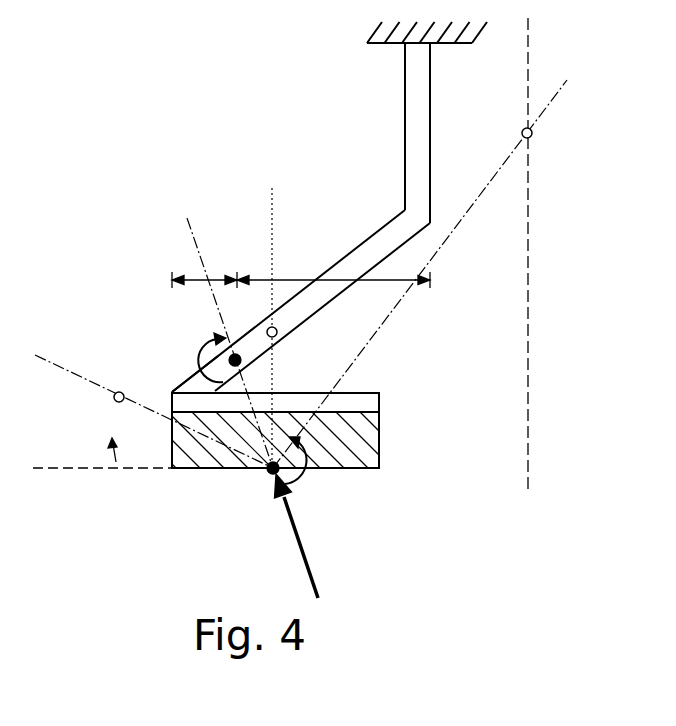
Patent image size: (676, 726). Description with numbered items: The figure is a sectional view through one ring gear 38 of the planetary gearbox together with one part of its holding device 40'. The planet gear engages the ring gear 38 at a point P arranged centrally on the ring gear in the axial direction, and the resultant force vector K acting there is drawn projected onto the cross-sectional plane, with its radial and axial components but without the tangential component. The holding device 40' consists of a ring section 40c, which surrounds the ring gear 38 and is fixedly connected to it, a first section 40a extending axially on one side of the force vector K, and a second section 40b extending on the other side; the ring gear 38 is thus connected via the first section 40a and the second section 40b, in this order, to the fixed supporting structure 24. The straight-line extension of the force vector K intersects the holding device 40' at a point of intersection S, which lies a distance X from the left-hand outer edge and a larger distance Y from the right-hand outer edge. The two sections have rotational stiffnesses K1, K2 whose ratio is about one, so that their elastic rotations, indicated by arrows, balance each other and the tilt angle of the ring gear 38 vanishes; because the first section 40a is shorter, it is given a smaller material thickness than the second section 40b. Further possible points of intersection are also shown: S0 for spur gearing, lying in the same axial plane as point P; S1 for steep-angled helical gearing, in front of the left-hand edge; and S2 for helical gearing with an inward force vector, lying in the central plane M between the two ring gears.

The holding device 40' is at (243, 217).
The first section 40a is at (200, 378).
The rotational stiffness K1 is at (137, 351).
The second section 40b is at (372, 250).
The rotational stiffness K2 is at (288, 301).
The ring section 40c is at (352, 386).
The fixed supporting structure 24 is at (403, 45).
The ring gear 38 is at (353, 437).
The central plane M is at (528, 38).
The point of intersection S0 is at (278, 331).
The point of intersection S is at (241, 360).
The point of intersection S1 is at (114, 397).
The point of intersection S2 is at (533, 132).
The point P is at (268, 472).
The force vector K is at (306, 540).
The distance X is at (203, 267).
The distance Y is at (333, 269).